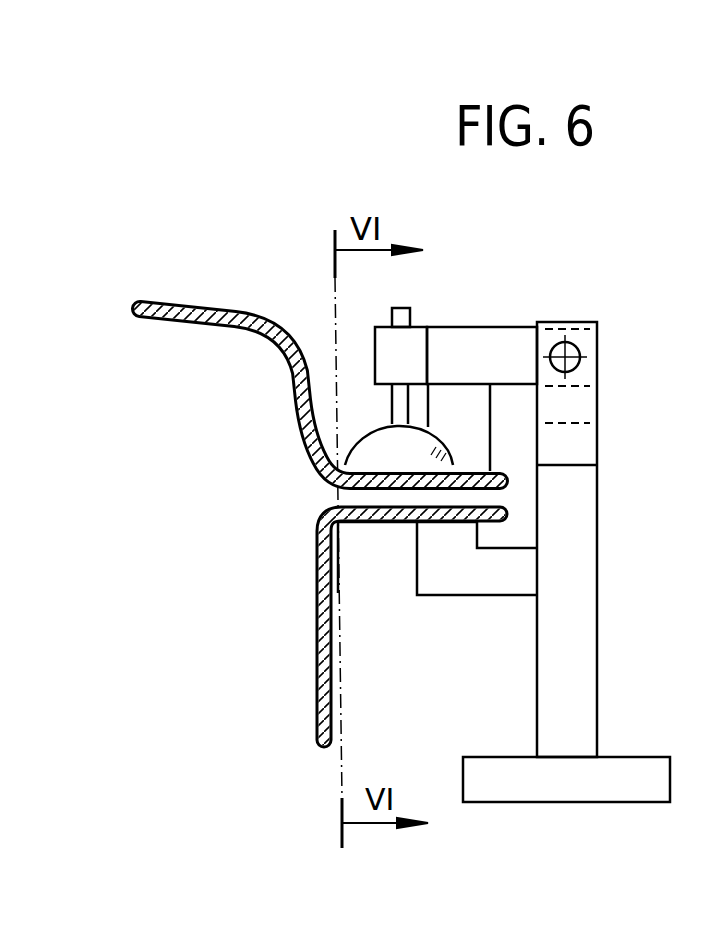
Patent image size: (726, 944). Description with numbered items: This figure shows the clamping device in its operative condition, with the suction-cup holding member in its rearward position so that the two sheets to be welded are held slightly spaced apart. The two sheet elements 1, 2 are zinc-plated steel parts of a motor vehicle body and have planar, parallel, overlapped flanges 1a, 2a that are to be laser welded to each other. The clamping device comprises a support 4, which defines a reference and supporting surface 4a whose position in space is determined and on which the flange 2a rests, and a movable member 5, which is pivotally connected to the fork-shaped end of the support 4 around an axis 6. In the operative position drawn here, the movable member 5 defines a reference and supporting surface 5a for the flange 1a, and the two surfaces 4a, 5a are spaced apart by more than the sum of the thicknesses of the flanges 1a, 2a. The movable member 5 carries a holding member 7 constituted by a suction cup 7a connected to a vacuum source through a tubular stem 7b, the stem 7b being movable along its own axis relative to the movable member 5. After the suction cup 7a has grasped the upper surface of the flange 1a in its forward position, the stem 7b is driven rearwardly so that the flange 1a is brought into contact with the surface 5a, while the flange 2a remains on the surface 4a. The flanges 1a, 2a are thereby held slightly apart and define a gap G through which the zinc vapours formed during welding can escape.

The sheet element 1 is at (200, 312).
The flange 1a is at (387, 498).
The sheet element 2 is at (322, 688).
The flange 2a is at (398, 513).
The support 4 is at (607, 706).
The reference and supporting surface 4a is at (502, 521).
The movable member 5 is at (481, 324).
The reference and supporting surface 5a is at (503, 476).
The axis 6 is at (575, 349).
The holding member 7 is at (359, 379).
The suction cup 7a is at (383, 442).
The tubular stem 7b is at (393, 400).
The gap G is at (345, 505).